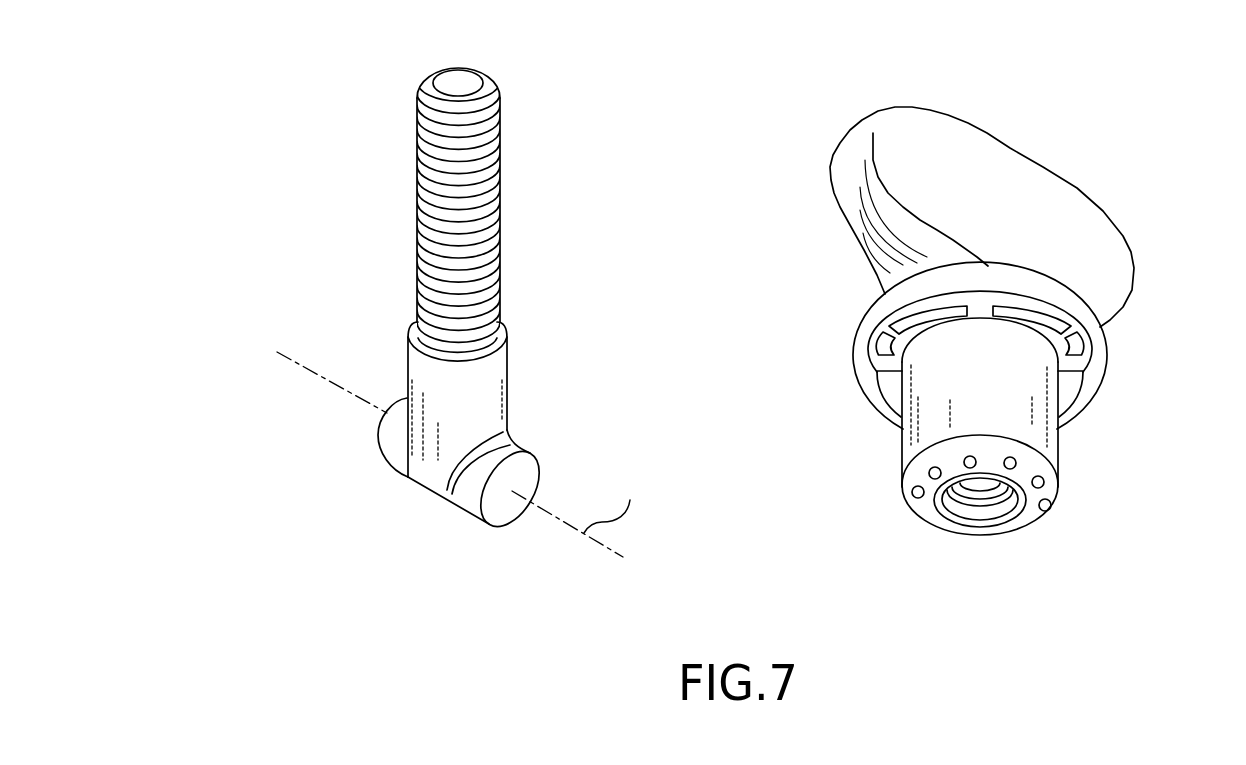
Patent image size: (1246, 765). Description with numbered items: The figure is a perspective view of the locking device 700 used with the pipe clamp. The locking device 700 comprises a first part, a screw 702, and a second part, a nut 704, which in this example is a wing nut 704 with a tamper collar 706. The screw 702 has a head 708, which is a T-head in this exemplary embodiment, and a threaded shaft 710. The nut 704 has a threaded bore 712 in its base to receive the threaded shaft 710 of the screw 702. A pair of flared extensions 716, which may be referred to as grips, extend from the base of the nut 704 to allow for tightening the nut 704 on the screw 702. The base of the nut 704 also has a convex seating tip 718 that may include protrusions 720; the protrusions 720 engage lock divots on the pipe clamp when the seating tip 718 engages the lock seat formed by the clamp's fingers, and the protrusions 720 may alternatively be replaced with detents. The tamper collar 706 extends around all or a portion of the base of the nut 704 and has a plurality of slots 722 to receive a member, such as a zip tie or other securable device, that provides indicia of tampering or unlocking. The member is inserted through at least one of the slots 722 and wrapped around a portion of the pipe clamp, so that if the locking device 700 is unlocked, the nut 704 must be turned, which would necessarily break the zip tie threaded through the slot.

The locking device 700 is at (468, 575).
The screw 702 is at (508, 343).
The nut 704 is at (1072, 187).
The tamper collar 706 is at (1088, 380).
The head 708 is at (425, 472).
The threaded shaft 710 is at (417, 218).
The threaded bore 712 is at (935, 413).
The flared extension 716 is at (920, 147).
The convex seating tip 718 is at (1025, 463).
The protrusions 720 is at (917, 497).
The slots 722 is at (1072, 347).